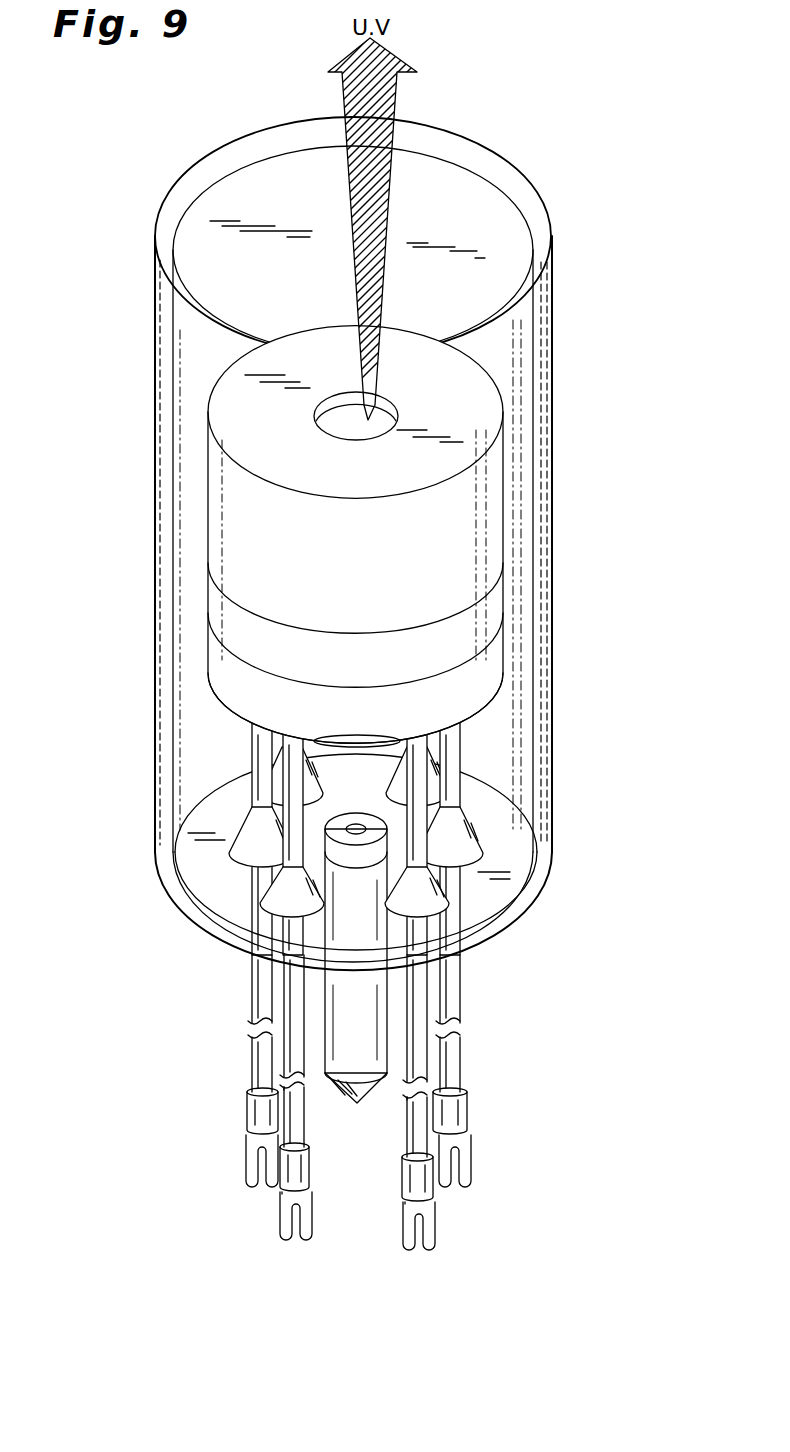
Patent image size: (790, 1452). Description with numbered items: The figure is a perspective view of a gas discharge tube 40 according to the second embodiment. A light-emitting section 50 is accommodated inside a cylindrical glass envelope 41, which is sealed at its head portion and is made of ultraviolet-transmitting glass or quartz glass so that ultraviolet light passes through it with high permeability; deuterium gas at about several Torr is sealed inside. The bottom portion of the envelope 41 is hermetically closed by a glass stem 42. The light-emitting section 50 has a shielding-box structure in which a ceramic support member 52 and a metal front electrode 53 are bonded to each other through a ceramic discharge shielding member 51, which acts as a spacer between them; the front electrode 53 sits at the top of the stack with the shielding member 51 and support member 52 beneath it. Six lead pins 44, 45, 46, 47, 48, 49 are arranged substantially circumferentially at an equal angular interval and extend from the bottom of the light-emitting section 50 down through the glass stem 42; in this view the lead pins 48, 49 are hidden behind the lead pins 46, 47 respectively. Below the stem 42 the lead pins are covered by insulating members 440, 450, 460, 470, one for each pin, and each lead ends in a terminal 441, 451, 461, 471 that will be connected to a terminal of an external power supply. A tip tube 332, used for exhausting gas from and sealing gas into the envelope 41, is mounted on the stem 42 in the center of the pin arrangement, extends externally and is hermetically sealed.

The gas discharge tube 40 is at (525, 156).
The glass envelope 41 is at (545, 290).
The glass stem 42 is at (520, 848).
The lead pin 44 is at (457, 738).
The lead pin 45 is at (253, 740).
The lead pin 46 is at (420, 788).
The lead pin 47 is at (290, 788).
The lead pin 48 is at (417, 776).
The lead pin 49 is at (292, 776).
The light-emitting section 50 is at (451, 536).
The ceramic discharge shielding member 51 is at (492, 593).
The ceramic support member 52 is at (414, 687).
The metal front electrode 53 is at (483, 515).
The tip tube 332 is at (360, 1104).
The insulating member 440 is at (460, 970).
The insulating member 450 is at (253, 973).
The insulating member 460 is at (422, 1008).
The insulating member 470 is at (290, 1008).
The terminal 441 is at (467, 1170).
The terminal 451 is at (245, 1170).
The terminal 461 is at (437, 1238).
The terminal 471 is at (282, 1236).